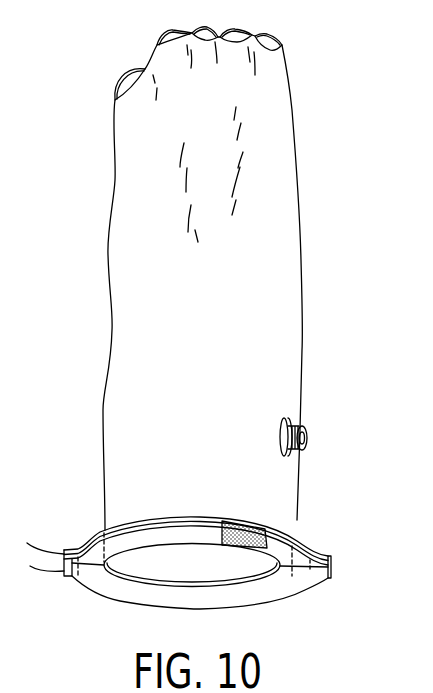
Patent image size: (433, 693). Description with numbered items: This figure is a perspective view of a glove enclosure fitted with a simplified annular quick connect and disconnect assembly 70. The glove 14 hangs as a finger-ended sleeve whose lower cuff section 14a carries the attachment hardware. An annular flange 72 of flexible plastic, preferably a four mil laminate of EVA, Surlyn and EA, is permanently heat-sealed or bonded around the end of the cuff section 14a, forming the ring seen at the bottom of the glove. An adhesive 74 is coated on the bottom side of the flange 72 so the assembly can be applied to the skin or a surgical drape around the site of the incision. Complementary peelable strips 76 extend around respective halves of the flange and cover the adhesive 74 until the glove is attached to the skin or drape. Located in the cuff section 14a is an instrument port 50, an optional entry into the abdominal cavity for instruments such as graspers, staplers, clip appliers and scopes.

The glove 14 is at (310, 174).
The cuff section 14a is at (102, 498).
The instrument port 50 is at (307, 433).
The quick connect and disconnect assembly 70 is at (115, 603).
The annular flange 72 is at (242, 528).
The adhesive 74 is at (241, 550).
The peelable strips 76 is at (40, 542).